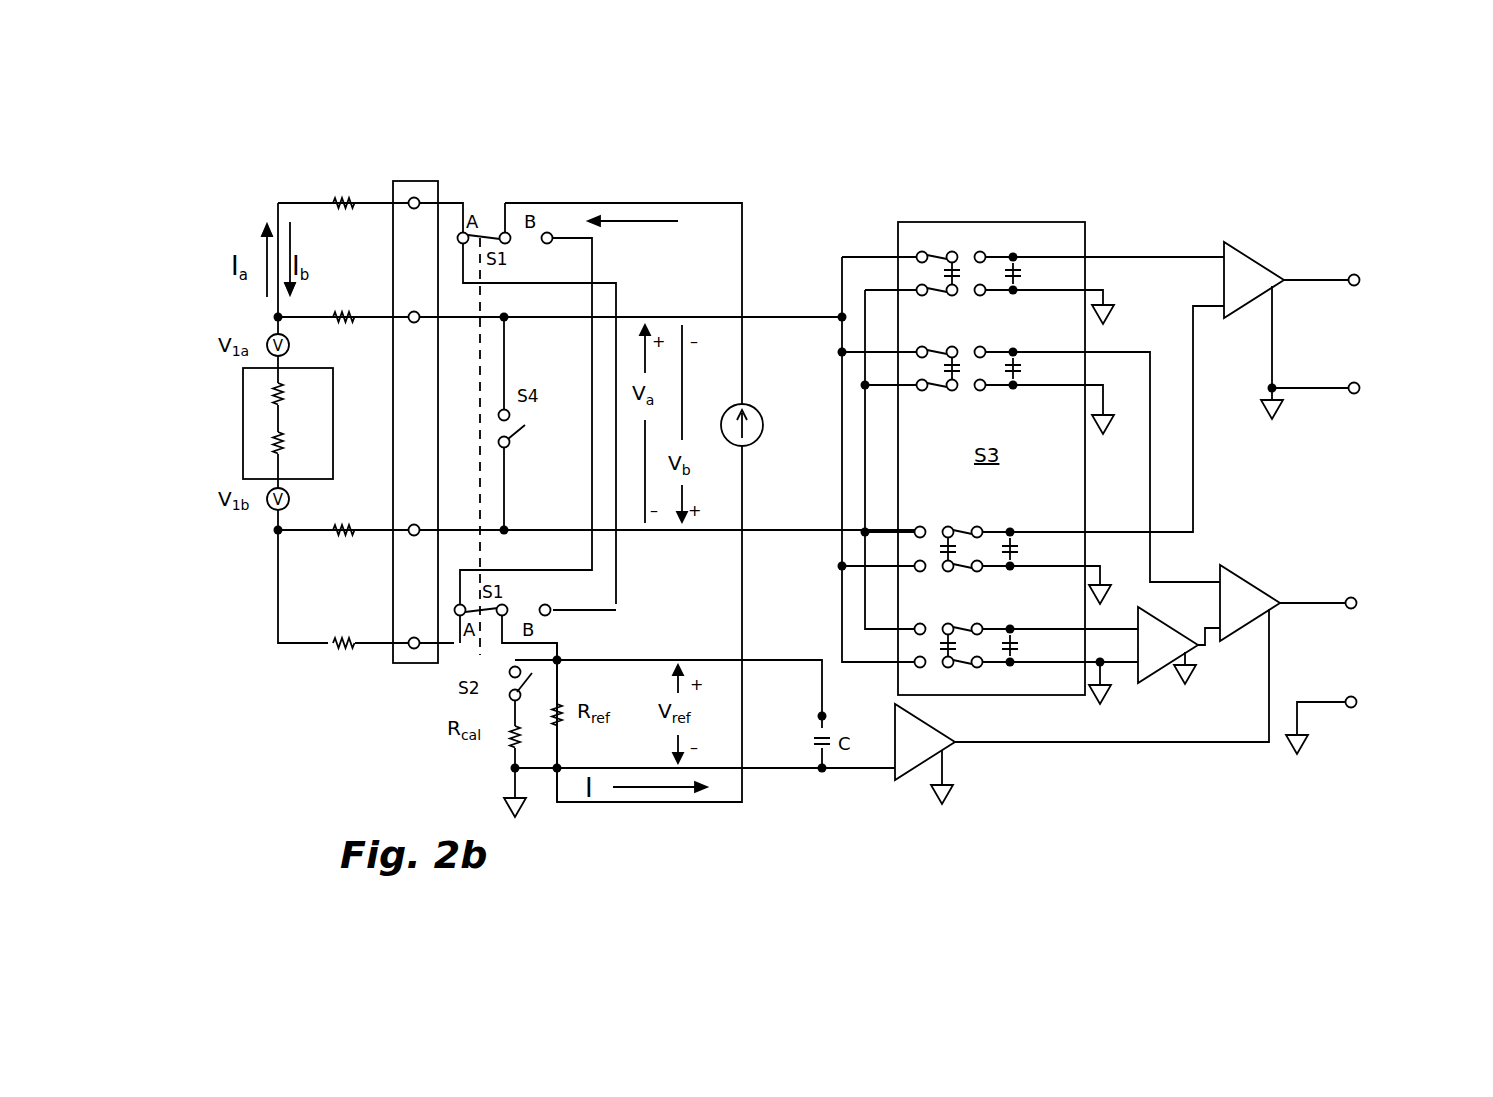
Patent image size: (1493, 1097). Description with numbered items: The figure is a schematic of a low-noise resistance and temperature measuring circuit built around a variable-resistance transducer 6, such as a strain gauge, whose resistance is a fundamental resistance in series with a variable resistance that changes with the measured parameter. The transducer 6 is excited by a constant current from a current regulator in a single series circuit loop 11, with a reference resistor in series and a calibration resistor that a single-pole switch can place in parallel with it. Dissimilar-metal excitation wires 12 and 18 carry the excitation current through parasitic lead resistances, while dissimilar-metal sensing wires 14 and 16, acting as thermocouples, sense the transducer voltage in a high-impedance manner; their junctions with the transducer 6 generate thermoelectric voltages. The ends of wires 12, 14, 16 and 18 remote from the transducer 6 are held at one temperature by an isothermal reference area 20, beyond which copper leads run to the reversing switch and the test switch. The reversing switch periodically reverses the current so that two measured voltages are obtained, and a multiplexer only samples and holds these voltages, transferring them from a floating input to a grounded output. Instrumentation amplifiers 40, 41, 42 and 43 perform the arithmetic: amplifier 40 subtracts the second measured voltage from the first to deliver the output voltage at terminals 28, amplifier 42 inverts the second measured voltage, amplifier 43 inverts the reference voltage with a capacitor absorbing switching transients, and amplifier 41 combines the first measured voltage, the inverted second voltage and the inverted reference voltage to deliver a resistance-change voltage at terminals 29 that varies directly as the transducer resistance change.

The transducer 6 is at (242, 369).
The single series circuit loop 11 is at (607, 198).
The excitation wire 12 is at (332, 202).
The output sensing wire 14 is at (332, 317).
The output sensing wire 16 is at (330, 529).
The excitation wire 18 is at (330, 643).
The isothermal reference area 20 is at (438, 390).
The terminals 28 is at (1358, 275).
The terminals 29 is at (1355, 598).
The instrumentation amplifier 40 is at (1240, 257).
The instrumentation amplifier 41 is at (1246, 589).
The instrumentation amplifier 42 is at (1142, 683).
The instrumentation amplifier 43 is at (937, 730).